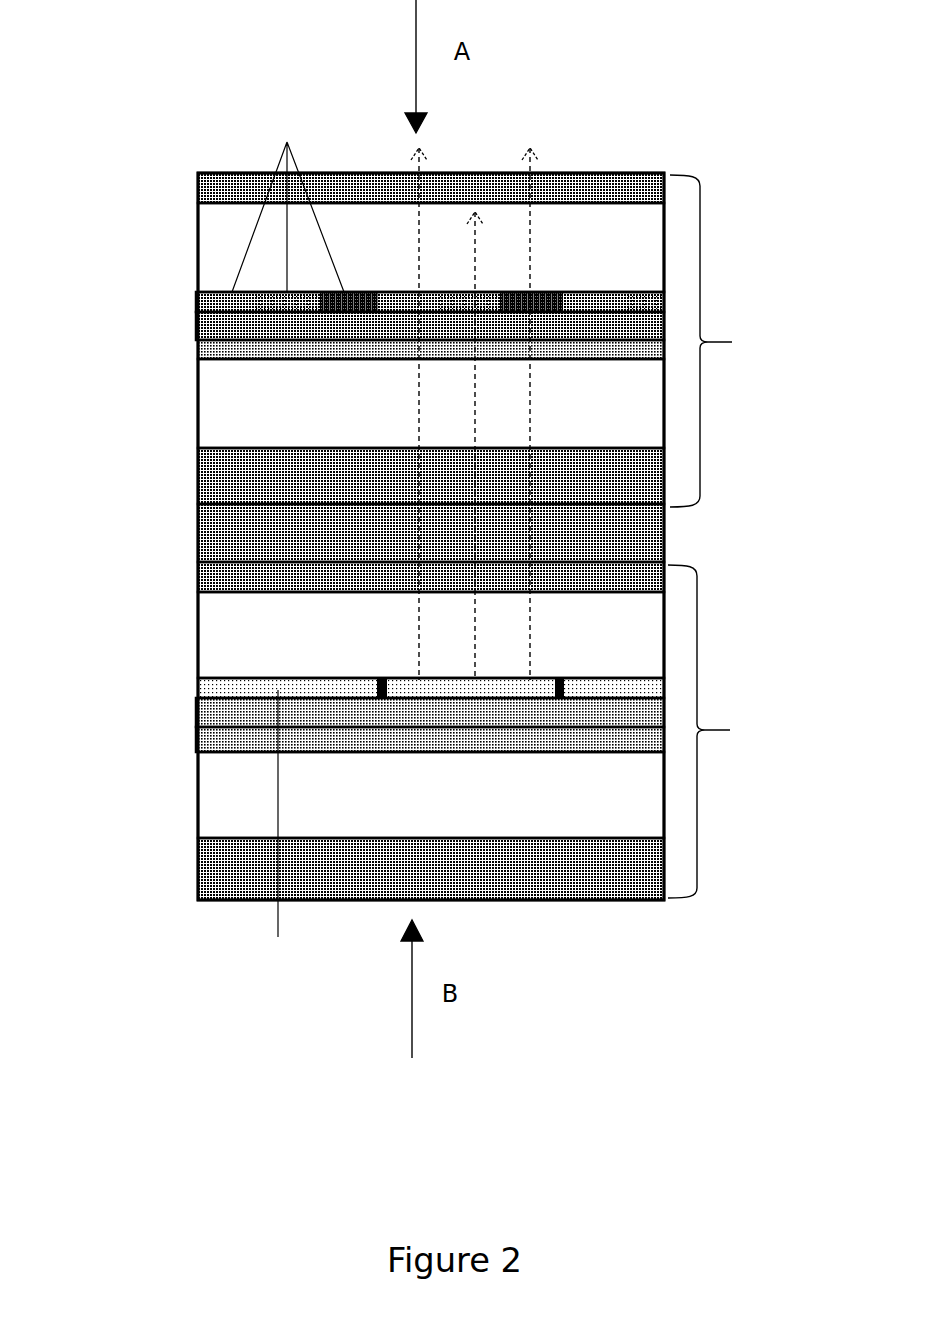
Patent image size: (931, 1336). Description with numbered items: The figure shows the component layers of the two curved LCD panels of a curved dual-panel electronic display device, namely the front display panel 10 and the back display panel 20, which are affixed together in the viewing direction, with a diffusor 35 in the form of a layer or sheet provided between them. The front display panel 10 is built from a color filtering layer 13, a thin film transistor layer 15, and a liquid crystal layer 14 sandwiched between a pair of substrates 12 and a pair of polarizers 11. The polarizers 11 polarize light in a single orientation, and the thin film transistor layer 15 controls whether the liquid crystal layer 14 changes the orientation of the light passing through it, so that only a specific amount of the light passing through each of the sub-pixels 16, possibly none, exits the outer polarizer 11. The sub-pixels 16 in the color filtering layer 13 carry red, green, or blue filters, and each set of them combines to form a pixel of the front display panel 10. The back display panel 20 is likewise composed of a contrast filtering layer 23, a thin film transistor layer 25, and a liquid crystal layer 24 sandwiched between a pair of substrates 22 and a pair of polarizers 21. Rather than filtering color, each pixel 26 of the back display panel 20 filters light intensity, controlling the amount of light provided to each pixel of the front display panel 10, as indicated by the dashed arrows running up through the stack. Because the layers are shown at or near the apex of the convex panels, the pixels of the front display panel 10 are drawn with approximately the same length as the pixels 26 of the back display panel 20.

The front display panel 10 is at (722, 341).
The polarizers 11 is at (198, 185).
The substrates 12 is at (198, 244).
The color filtering layer 13 is at (198, 301).
The liquid crystal layer 14 is at (198, 327).
The thin film transistor layer 15 is at (198, 349).
The sub-pixels 16 is at (288, 202).
The back display panel 20 is at (720, 731).
The polarizers 21 is at (198, 577).
The substrates 22 is at (198, 630).
The contrast filtering layer 23 is at (198, 687).
The liquid crystal layer 24 is at (198, 713).
The thin film transistor layer 25 is at (198, 740).
The pixel 26 is at (280, 832).
The diffusor 35 is at (664, 538).